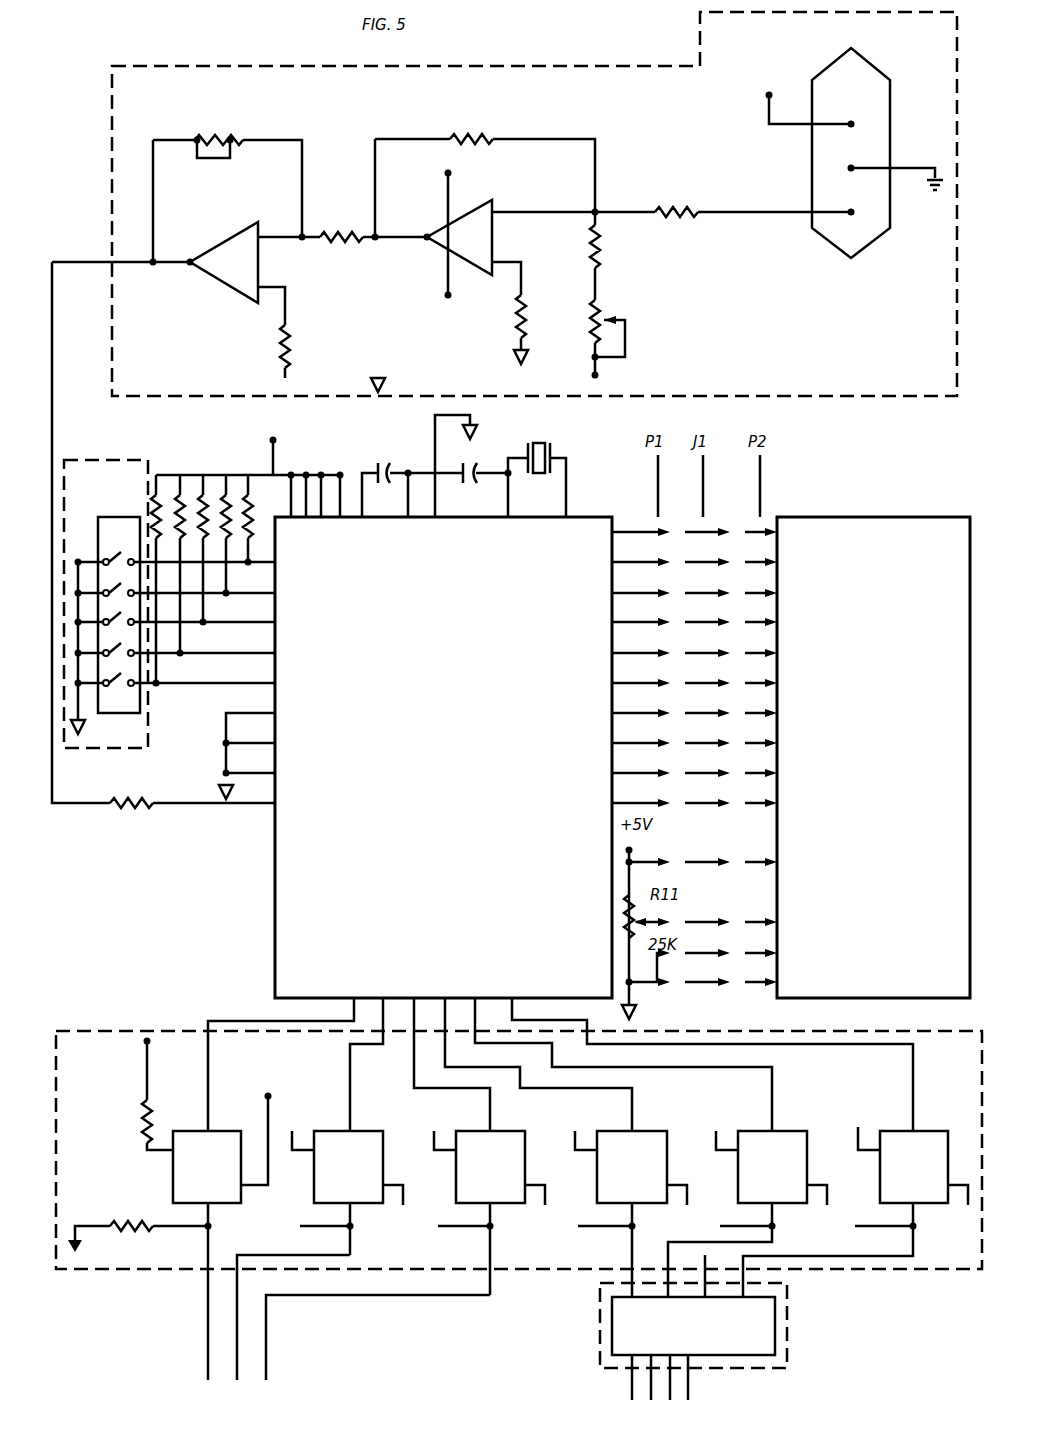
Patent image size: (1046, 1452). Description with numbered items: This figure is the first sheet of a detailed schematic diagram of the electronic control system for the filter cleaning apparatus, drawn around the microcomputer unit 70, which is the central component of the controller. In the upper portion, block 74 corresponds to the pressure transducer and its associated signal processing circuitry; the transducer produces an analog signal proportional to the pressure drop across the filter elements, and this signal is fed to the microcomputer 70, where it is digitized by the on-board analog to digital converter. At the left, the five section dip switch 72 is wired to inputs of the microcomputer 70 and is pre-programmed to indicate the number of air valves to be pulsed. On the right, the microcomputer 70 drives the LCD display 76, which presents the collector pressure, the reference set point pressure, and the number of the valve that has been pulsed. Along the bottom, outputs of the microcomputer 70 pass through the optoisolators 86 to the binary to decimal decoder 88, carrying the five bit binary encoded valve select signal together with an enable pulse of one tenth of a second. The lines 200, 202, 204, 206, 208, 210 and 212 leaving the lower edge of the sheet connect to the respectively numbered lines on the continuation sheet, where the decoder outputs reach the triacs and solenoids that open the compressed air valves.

The microcomputer unit 70 is at (272, 886).
The dip switch 72 is at (110, 458).
The pressure transducer 74 is at (200, 63).
The LCD display 76 is at (848, 515).
The optoisolators 86 is at (112, 1030).
The binary to decimal decoder 88 is at (787, 1316).
The line 200 is at (208, 1312).
The line 202 is at (237, 1340).
The line 204 is at (268, 1333).
The line 206 is at (632, 1374).
The line 208 is at (651, 1383).
The line 210 is at (688, 1384).
The line 212 is at (670, 1374).